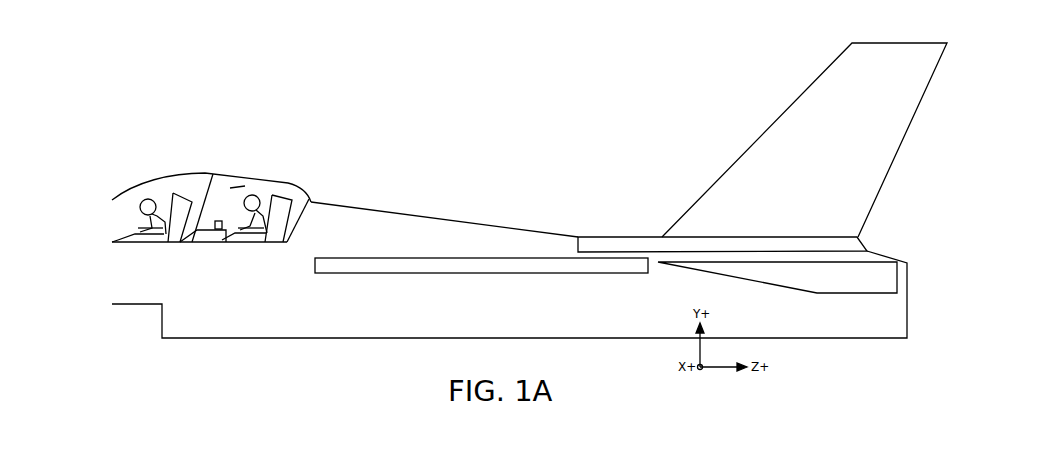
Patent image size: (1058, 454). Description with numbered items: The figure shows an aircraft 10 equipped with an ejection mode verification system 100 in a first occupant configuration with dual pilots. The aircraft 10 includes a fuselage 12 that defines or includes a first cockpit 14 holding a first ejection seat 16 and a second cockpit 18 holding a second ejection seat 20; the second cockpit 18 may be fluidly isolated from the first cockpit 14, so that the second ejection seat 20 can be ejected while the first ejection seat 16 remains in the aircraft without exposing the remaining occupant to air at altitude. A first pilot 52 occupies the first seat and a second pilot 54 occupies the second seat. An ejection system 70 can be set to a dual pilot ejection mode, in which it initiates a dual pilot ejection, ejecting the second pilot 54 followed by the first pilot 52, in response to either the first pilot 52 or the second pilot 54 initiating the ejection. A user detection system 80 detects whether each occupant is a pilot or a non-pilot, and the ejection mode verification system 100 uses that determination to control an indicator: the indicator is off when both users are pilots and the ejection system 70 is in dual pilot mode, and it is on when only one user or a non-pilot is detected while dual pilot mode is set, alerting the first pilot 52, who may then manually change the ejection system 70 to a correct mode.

The aircraft 10 is at (457, 168).
The fuselage 12 is at (598, 235).
The first cockpit 14 is at (190, 175).
The first ejection seat 16 is at (173, 193).
The second cockpit 18 is at (238, 187).
The second ejection seat 20 is at (283, 192).
The first pilot 52 is at (150, 243).
The second pilot 54 is at (263, 243).
The ejection system 70 is at (118, 155).
The user detection system 80 is at (92, 185).
The ejection mode verification system 100 is at (145, 117).